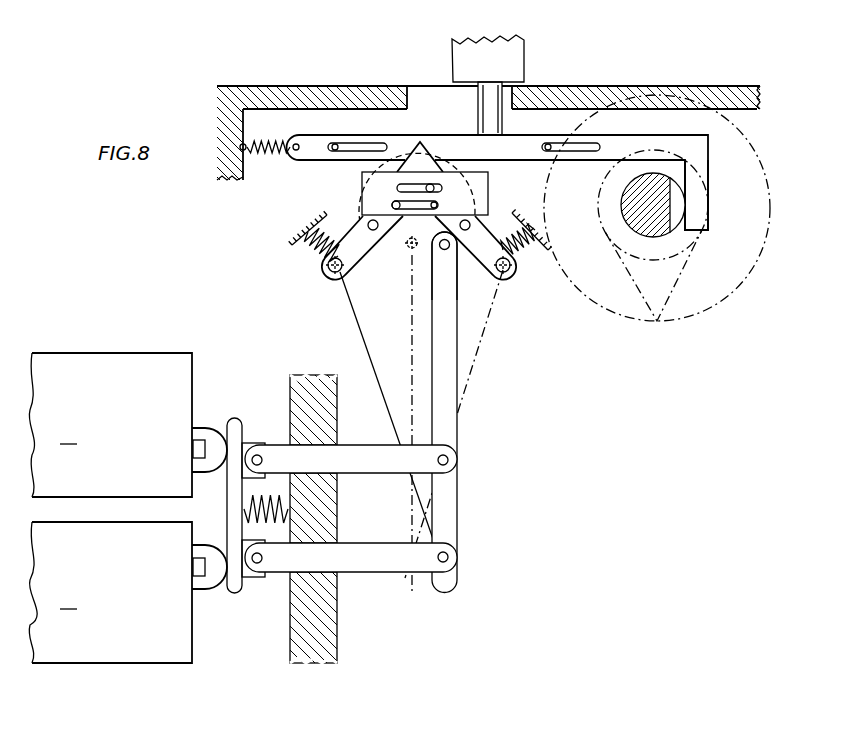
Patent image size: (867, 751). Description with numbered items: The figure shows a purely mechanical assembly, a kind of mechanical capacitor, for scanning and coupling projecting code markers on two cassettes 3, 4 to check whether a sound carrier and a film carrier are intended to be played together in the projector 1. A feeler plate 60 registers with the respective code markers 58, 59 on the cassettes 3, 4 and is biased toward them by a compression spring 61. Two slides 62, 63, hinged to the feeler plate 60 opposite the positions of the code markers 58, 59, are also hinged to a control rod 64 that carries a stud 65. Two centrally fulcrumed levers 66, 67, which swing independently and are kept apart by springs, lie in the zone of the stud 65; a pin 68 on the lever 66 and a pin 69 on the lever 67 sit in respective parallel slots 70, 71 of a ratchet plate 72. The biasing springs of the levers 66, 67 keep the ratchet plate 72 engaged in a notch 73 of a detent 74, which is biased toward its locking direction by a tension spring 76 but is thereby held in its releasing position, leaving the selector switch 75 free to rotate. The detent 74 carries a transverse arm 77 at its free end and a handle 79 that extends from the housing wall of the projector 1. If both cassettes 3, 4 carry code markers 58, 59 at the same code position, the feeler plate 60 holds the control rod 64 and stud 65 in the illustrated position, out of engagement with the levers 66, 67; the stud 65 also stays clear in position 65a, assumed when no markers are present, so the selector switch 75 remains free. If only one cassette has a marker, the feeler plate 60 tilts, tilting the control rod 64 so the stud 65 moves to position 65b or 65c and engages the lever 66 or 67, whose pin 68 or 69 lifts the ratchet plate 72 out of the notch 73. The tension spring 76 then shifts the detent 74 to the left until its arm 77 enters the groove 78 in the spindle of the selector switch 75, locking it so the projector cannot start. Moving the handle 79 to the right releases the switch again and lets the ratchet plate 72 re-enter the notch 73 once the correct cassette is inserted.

The projector 1 is at (709, 76).
The cassette 3 is at (110, 425).
The cassette 4 is at (110, 592).
The code marker 58 is at (201, 436).
The code marker 59 is at (201, 583).
The feeler plate 60 is at (234, 422).
The compression spring 61 is at (320, 509).
The slide 62 is at (370, 458).
The slide 63 is at (362, 562).
The control rod 64 is at (446, 515).
The stud 65 is at (450, 250).
The stud position 65a is at (410, 252).
The stud position 65b is at (327, 268).
The stud position 65c is at (512, 272).
The lever 66 is at (368, 396).
The lever 67 is at (478, 394).
The pin 68 is at (392, 205).
The pin 69 is at (432, 190).
The slot 70 is at (398, 188).
The slot 71 is at (440, 206).
The ratchet plate 72 is at (400, 140).
The notch 73 is at (421, 148).
The detent 74 is at (333, 146).
The selector switch 75 is at (682, 300).
The tension spring 76 is at (266, 142).
The transverse arm 77 is at (700, 208).
The groove 78 is at (676, 222).
The handle 79 is at (510, 60).